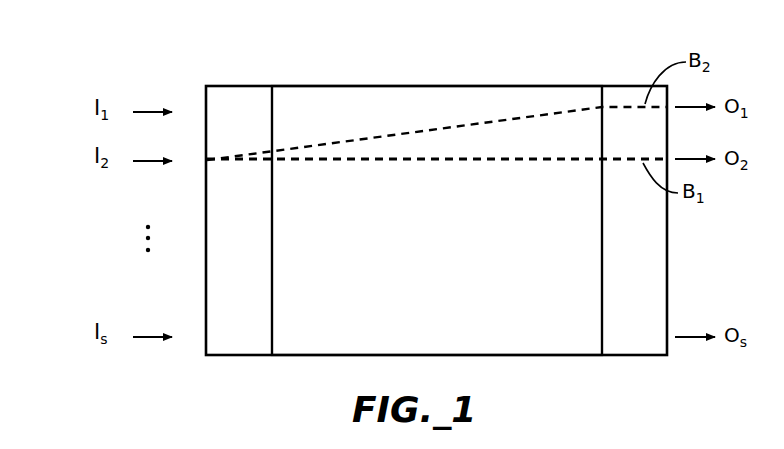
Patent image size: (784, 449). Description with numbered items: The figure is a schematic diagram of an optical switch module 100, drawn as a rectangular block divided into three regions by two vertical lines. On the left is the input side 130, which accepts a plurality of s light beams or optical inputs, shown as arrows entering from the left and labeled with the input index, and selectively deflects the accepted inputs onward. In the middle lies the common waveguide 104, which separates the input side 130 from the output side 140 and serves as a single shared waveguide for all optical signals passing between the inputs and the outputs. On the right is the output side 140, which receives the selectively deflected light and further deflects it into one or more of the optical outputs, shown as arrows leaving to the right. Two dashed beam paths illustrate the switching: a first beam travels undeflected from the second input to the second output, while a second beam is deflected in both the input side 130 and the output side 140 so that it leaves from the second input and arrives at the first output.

The optical switch module 100 is at (86, 231).
The common waveguide 104 is at (432, 78).
The input side 130 is at (247, 78).
The output side 140 is at (632, 78).